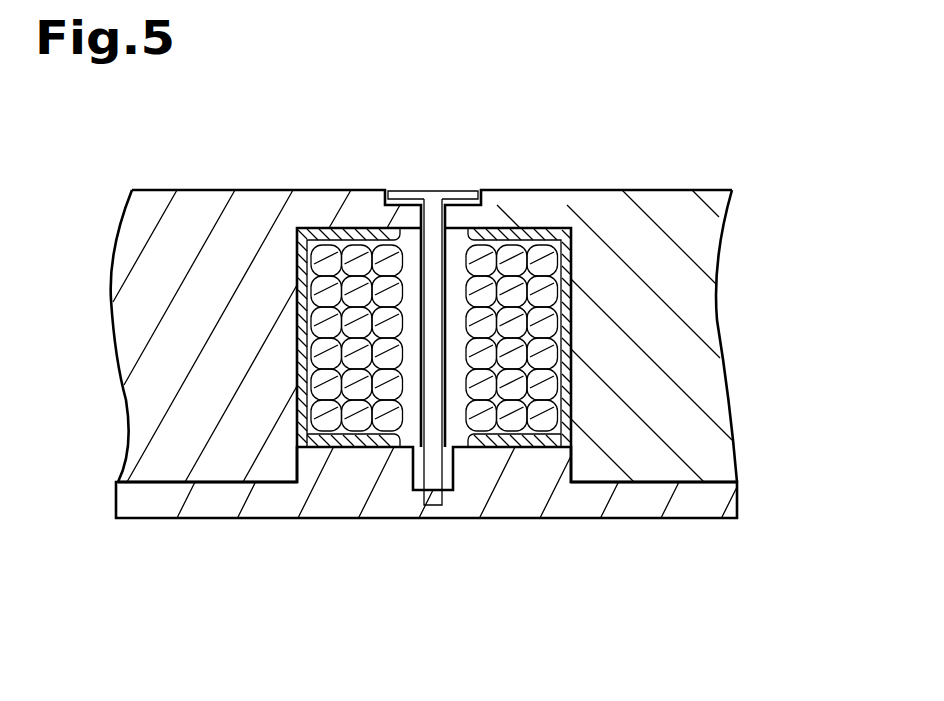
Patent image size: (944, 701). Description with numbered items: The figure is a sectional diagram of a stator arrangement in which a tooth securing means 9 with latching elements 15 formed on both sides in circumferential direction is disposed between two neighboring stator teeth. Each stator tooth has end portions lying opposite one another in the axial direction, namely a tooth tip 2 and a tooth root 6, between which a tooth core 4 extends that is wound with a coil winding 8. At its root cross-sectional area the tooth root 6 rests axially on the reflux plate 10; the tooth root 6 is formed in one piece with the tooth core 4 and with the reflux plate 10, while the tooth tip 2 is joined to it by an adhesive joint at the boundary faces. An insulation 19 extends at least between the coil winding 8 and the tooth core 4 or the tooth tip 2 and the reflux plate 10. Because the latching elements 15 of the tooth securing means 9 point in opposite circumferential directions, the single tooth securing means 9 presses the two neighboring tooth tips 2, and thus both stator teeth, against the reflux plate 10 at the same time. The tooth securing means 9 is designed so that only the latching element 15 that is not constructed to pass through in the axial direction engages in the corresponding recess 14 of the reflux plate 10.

The tooth tip 2 is at (200, 203).
The tooth core 4 is at (197, 357).
The tooth root 6 is at (203, 470).
The coil winding 8 is at (330, 384).
The tooth securing means 9 is at (433, 440).
The reflux plate 10 is at (340, 502).
The recess 14 is at (492, 163).
The latching element 15 is at (472, 192).
The insulation 19 is at (299, 265).